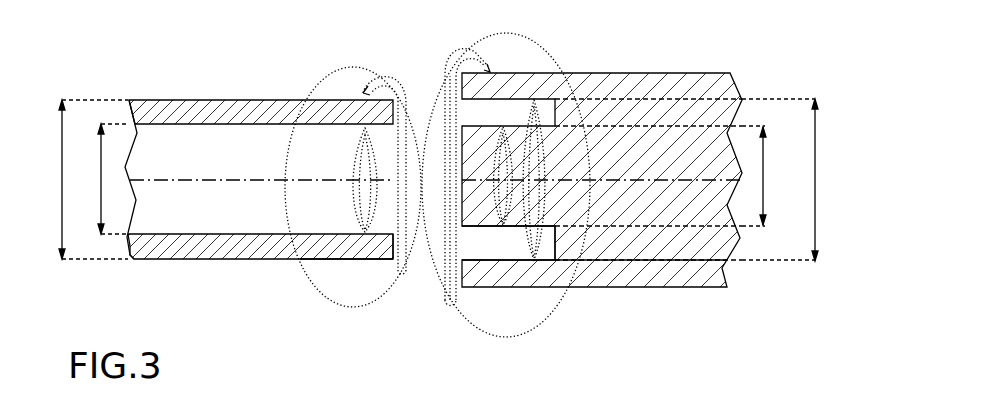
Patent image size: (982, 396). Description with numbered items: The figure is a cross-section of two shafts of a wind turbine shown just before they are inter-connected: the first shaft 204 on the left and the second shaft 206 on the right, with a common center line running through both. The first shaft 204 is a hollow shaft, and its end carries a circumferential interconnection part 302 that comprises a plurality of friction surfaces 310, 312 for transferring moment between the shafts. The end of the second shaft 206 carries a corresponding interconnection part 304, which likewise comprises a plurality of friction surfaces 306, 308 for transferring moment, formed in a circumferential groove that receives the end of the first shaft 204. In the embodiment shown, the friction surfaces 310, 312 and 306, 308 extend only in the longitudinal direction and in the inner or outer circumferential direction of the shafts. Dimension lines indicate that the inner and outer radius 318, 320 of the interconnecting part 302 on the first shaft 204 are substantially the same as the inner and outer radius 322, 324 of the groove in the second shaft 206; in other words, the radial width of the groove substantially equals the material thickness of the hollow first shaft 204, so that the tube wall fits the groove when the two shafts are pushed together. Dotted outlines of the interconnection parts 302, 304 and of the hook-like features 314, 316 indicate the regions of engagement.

The first shaft 204 is at (268, 98).
The second shaft 206 is at (650, 73).
The interconnection part 302 is at (352, 68).
The interconnection part 304 is at (506, 173).
The friction surface 306 is at (488, 227).
The friction surface 308 is at (552, 262).
The friction surface 310 is at (372, 262).
The friction surface 312 is at (352, 258).
The coupling element 314 is at (507, 127).
The hook 316 is at (390, 77).
The inner radius 318 is at (105, 210).
The outer radius 320 is at (63, 130).
The inner radius 322 is at (765, 147).
The outer radius 324 is at (816, 235).